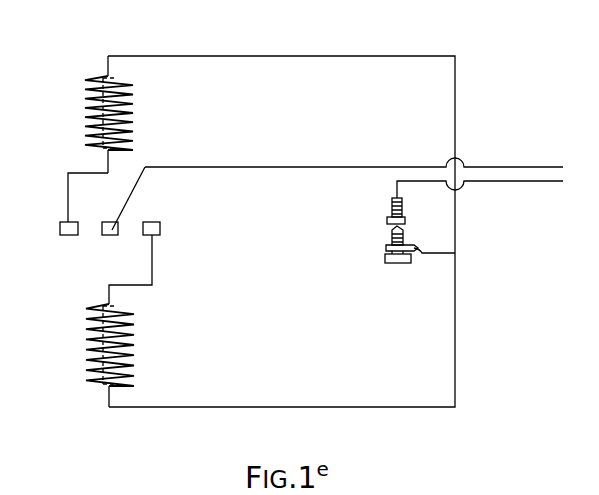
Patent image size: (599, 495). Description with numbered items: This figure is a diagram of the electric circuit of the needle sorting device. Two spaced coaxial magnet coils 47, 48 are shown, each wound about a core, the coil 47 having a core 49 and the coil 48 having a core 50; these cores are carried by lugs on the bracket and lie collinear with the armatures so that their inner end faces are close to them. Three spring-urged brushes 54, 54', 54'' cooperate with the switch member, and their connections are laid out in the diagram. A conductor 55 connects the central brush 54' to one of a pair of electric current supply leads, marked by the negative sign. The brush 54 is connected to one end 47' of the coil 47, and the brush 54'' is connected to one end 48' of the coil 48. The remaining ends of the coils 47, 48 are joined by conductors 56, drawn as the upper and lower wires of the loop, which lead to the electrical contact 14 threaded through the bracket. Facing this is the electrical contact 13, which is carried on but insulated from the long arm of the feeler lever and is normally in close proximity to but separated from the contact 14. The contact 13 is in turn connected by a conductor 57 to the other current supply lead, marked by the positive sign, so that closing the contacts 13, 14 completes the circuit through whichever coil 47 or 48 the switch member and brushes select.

The conductors 56 is at (280, 55).
The magnet coil 47 is at (125, 114).
The core 49 is at (92, 100).
The end of the coil 47' is at (64, 197).
The brush 54 is at (52, 244).
The central brush 54' is at (110, 218).
The brush 54'' is at (137, 248).
The end of the coil 48' is at (153, 269).
The magnet coil 48 is at (129, 355).
The core 50 is at (95, 357).
The conductor 55 is at (503, 166).
The conductor 57 is at (507, 183).
The electrical contact 13 is at (392, 208).
The electrical contact 14 is at (392, 236).